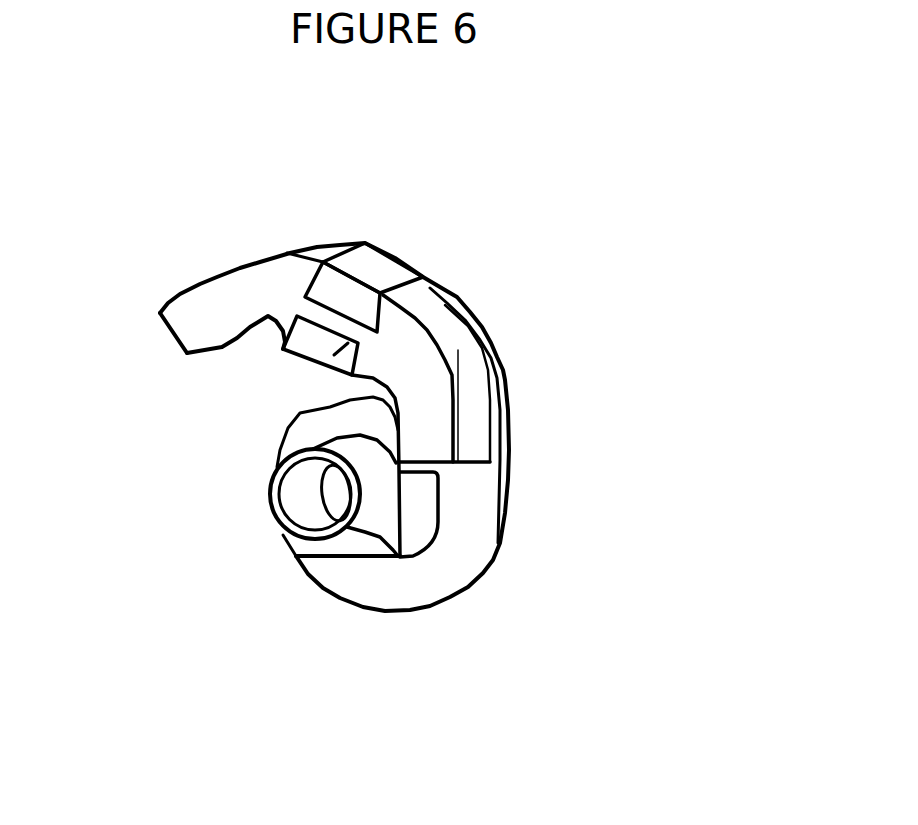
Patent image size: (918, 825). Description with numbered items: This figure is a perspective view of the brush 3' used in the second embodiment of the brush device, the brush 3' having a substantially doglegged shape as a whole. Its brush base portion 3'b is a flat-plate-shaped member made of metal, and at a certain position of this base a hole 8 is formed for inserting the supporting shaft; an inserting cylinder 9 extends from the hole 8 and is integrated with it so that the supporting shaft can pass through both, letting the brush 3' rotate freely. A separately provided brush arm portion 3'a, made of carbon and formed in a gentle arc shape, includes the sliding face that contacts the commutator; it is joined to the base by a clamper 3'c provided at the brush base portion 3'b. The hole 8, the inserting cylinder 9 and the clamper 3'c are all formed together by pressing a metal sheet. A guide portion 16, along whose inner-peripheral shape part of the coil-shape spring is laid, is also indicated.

The brush 3' is at (467, 366).
The brush arm portion 3'a is at (170, 229).
The brush base portion 3'b is at (509, 467).
The clamper 3'c is at (449, 240).
The hole 8 is at (300, 502).
The inserting cylinder 9 is at (377, 498).
The guide portion 16 is at (415, 532).